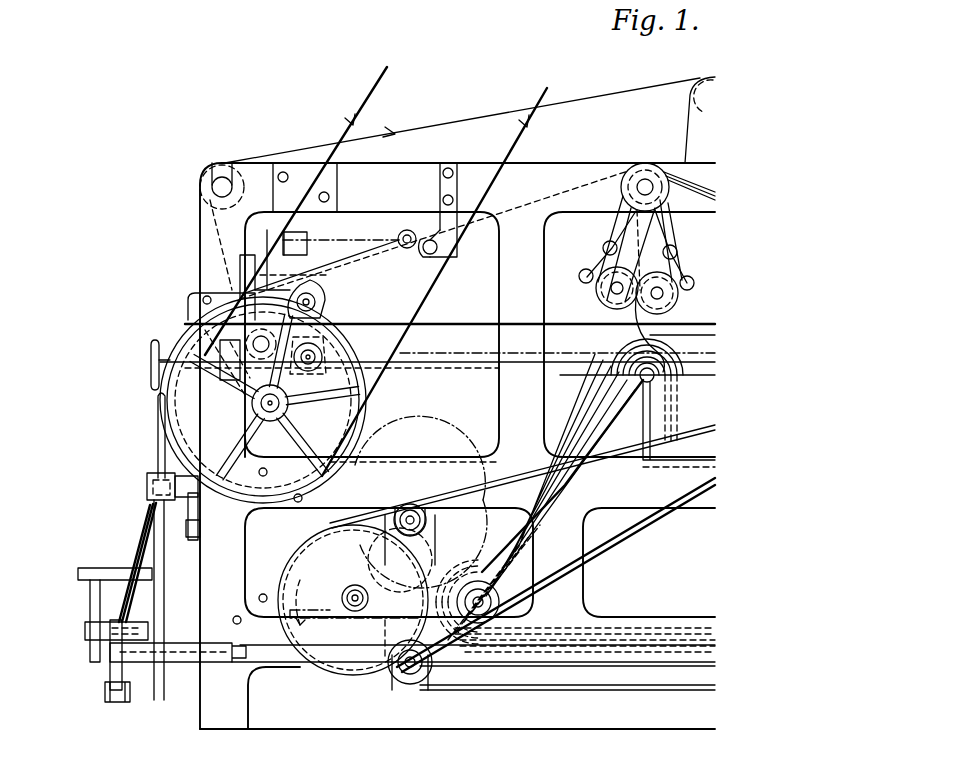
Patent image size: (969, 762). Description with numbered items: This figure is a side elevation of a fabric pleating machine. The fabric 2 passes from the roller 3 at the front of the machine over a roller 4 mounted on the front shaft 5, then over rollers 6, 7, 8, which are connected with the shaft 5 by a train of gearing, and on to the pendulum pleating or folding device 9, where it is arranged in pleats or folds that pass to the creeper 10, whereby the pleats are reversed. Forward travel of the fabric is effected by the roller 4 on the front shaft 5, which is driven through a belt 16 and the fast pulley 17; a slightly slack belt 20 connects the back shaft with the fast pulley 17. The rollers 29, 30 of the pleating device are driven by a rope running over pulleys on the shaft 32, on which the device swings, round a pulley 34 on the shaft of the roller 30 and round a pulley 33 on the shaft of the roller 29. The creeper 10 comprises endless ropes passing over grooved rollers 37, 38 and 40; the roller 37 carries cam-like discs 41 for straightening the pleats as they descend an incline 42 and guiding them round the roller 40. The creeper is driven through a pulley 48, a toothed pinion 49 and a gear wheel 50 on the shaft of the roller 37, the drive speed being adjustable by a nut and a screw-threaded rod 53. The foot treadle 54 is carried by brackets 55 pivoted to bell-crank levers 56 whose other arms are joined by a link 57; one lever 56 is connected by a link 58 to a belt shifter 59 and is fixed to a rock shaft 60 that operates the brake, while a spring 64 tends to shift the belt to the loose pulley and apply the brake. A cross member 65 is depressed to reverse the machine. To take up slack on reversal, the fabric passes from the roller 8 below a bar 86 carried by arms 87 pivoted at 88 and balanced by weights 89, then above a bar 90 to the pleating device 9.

The fabric 2 is at (601, 98).
The roller 3 is at (212, 210).
The roller 4 is at (250, 388).
The front shaft 5 is at (258, 406).
The roller 6 is at (205, 330).
The roller 7 is at (323, 350).
The roller 8 is at (322, 296).
The pendulum pleating or folding device 9 is at (616, 235).
The creeper 10 is at (468, 656).
The belt 16 is at (374, 85).
The fast pulley 17 is at (178, 412).
The belt 20 is at (466, 324).
The roller 29 is at (678, 278).
The roller 30 is at (602, 300).
The shaft 32 is at (641, 182).
The pulley 33 is at (678, 310).
The pulley 34 is at (596, 288).
The roller 37 is at (407, 560).
The roller 38 is at (435, 665).
The roller 40 is at (494, 590).
The cam-like discs 41 is at (466, 470).
The incline 42 is at (552, 484).
The pulley 48 is at (292, 566).
The toothed pinion 49 is at (343, 596).
The gear wheel 50 is at (345, 554).
The rod 53 is at (151, 360).
The foot treadle 54 is at (95, 568).
The brackets 55 is at (92, 592).
The bell-crank levers 56 is at (112, 673).
The link 57 is at (105, 696).
The link 58 is at (160, 600).
The belt shifter 59 is at (158, 458).
The rock shaft 60 is at (260, 665).
The spring 64 is at (148, 518).
The cross member 65 is at (190, 530).
The bar 86 is at (406, 229).
The arms 87 is at (354, 237).
The pivots 88 is at (250, 295).
The weights 89 is at (188, 301).
The bar 90 is at (427, 254).